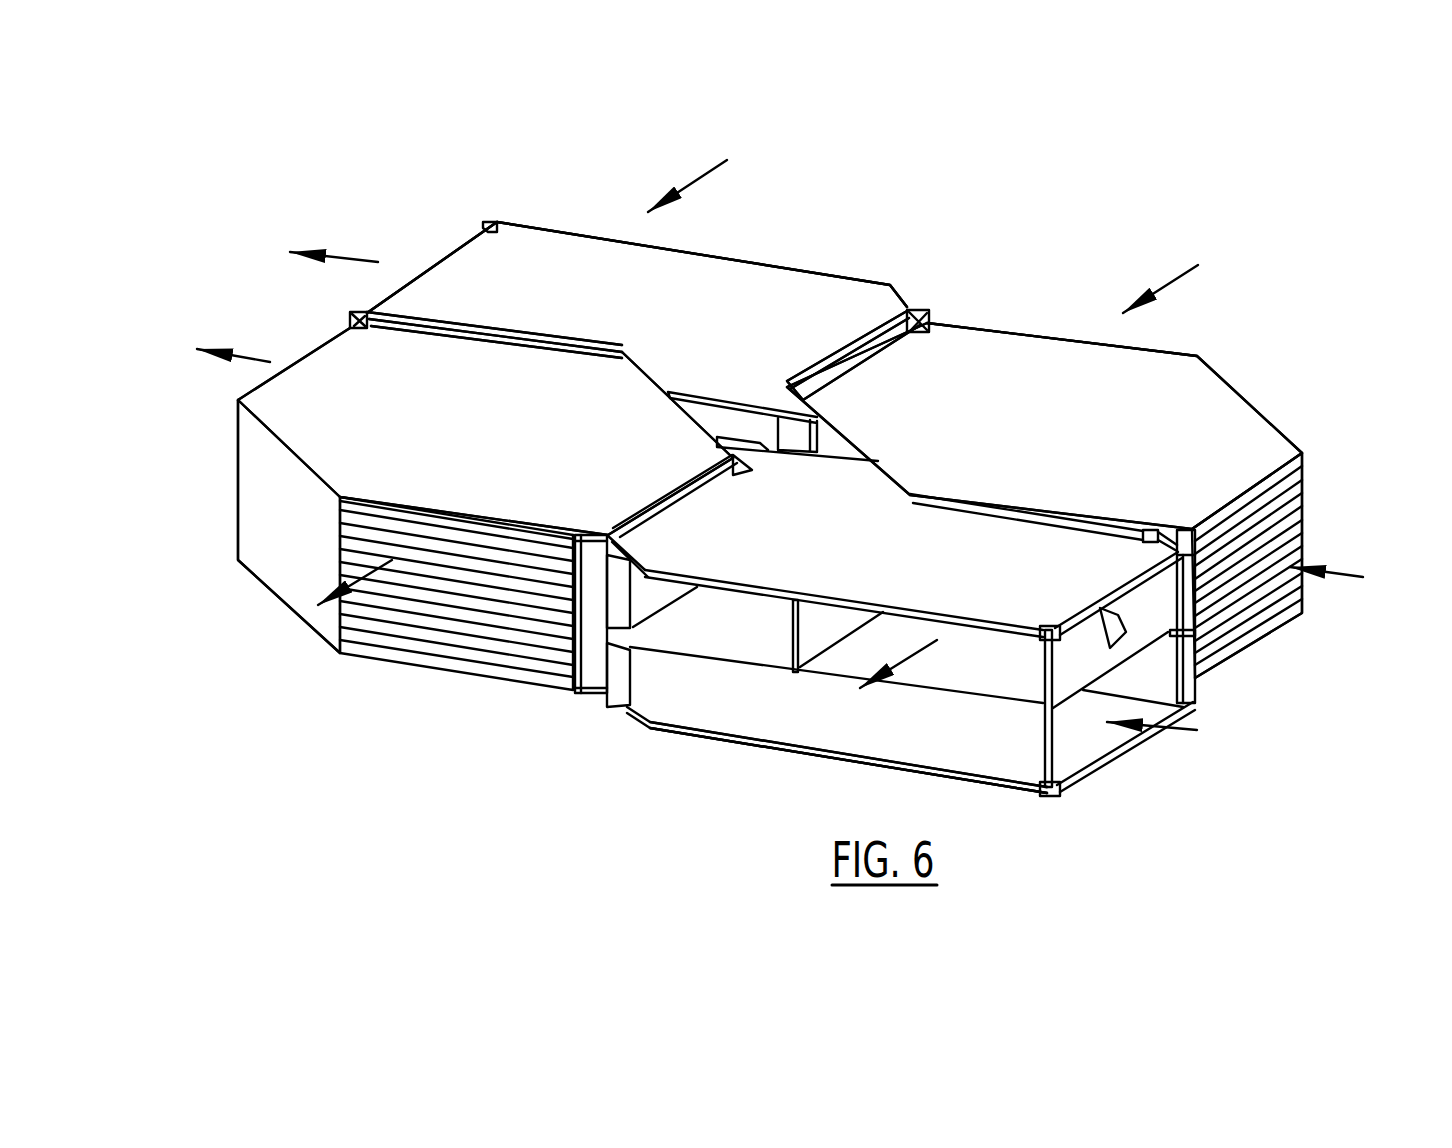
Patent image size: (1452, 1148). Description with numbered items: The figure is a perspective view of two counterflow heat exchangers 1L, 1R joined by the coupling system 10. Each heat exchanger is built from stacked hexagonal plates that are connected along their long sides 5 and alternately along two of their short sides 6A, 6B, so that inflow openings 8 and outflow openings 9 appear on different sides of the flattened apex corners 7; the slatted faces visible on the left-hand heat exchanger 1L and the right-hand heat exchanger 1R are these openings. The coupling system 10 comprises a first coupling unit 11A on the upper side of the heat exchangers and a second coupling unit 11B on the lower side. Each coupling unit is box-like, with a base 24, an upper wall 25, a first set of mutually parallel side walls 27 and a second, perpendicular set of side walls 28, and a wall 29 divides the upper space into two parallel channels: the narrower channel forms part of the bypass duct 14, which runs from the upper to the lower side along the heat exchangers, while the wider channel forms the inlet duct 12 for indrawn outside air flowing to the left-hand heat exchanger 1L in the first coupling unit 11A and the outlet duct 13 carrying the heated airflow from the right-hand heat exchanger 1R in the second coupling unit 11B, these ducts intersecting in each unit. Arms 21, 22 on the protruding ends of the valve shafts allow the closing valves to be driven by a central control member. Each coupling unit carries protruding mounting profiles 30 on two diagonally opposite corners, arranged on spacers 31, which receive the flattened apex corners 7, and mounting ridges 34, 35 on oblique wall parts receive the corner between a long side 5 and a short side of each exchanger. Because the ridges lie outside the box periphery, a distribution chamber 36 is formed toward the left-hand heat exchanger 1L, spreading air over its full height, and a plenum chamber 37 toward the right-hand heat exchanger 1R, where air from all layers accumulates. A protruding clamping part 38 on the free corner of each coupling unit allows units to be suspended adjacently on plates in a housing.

The left-hand heat exchanger 1L is at (265, 608).
The right-hand heat exchanger 1R is at (1308, 407).
The long side 5 is at (282, 438).
The short side 6A is at (512, 332).
The short side 6B is at (312, 345).
The flattened apex corner 7 is at (378, 328).
The inflow opening 8 is at (1300, 482).
The outflow opening 9 is at (383, 512).
The coupling system 10 is at (990, 187).
The first coupling unit 11A is at (818, 260).
The second coupling unit 11B is at (717, 755).
The inlet duct 12 is at (1086, 746).
The outlet duct 13 is at (990, 677).
The bypass duct 14 is at (717, 642).
The arm 21 is at (447, 252).
The arm 22 is at (1108, 650).
The base 24 is at (770, 742).
The upper wall 25 is at (698, 278).
The side wall 27 is at (824, 733).
The side wall 28 is at (1152, 600).
The wall 29 is at (807, 630).
The mounting profile 30 is at (352, 312).
The spacer 31 is at (398, 297).
The mounting ridge 34 is at (803, 372).
The mounting ridge 35 is at (627, 350).
The distribution chamber 36 is at (522, 330).
The plenum chamber 37 is at (837, 367).
The clamping part 38 is at (497, 220).